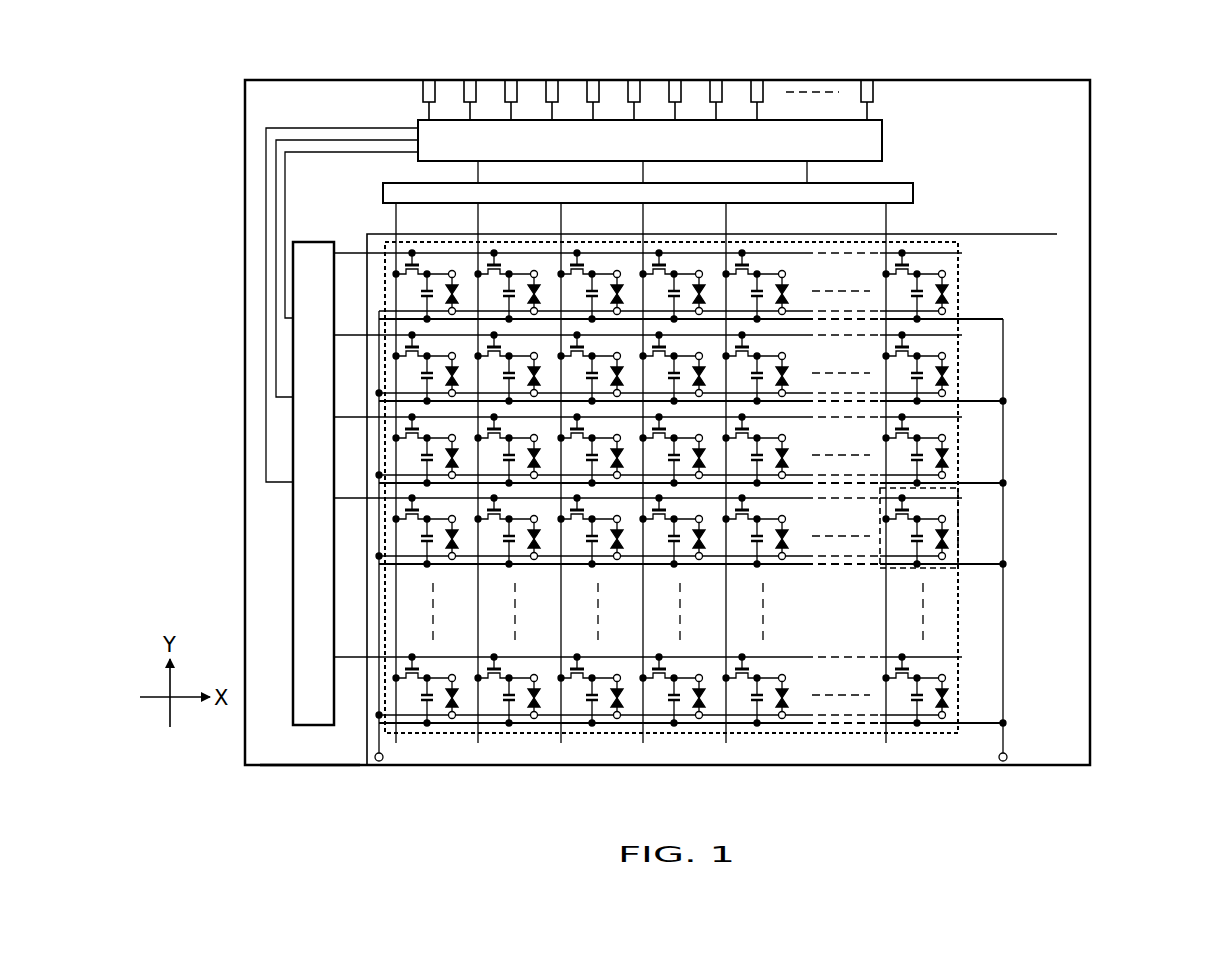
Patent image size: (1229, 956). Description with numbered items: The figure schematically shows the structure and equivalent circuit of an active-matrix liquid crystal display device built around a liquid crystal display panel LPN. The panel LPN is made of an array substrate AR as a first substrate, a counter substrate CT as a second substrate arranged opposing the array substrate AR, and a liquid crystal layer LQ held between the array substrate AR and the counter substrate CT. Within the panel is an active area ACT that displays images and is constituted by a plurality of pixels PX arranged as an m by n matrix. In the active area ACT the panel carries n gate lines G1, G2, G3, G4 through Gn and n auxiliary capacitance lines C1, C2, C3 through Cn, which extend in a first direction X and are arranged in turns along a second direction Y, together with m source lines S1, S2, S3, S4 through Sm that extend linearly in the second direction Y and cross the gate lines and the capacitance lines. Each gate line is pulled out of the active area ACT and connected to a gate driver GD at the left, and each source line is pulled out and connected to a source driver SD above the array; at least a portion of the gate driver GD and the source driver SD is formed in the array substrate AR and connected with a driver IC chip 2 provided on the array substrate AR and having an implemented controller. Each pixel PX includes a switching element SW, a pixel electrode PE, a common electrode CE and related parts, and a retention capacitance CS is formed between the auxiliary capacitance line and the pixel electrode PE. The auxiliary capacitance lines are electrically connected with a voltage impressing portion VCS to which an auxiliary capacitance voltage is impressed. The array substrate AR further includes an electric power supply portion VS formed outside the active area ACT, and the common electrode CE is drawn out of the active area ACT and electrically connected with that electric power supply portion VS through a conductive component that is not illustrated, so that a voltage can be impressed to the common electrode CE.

The driver IC chip 2 is at (882, 120).
The liquid crystal display panel LPN is at (1118, 93).
The source driver SD is at (913, 191).
The counter substrate CT is at (1057, 234).
The gate driver GD is at (293, 572).
The active area ACT is at (958, 349).
The gate line G1 is at (350, 252).
The gate line G2 is at (350, 334).
The gate line G3 is at (350, 416).
The gate line G4 is at (350, 497).
The gate line Gn is at (350, 656).
The source line S1 is at (398, 222).
The source line S2 is at (480, 222).
The source line S3 is at (563, 222).
The source line S4 is at (645, 222).
The source line Sm is at (888, 222).
The auxiliary capacitance line C1 is at (980, 318).
The auxiliary capacitance line C2 is at (980, 400).
The auxiliary capacitance line C3 is at (980, 482).
The auxiliary capacitance line Cn is at (983, 722).
The electric power supply portion VS is at (383, 760).
The voltage impressing portion VCS is at (1007, 754).
The pixel PX is at (935, 534).
The switching element SW is at (880, 508).
The retention capacitance CS is at (904, 537).
The pixel electrode PE is at (946, 517).
The liquid crystal layer LQ is at (951, 532).
The common electrode CE is at (946, 556).
The array substrate AR is at (310, 766).